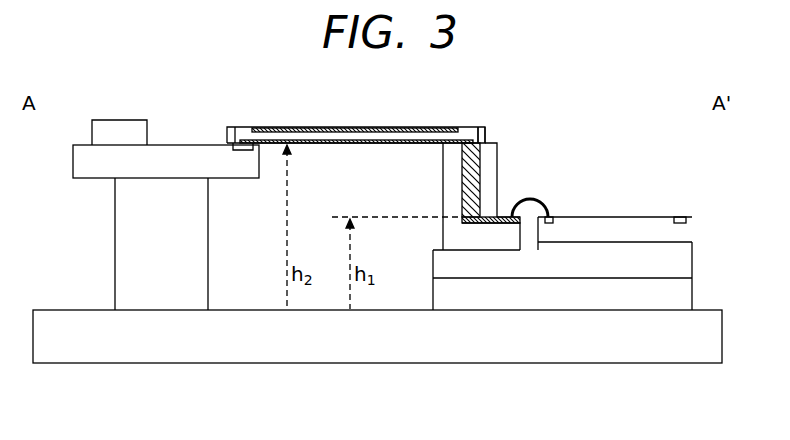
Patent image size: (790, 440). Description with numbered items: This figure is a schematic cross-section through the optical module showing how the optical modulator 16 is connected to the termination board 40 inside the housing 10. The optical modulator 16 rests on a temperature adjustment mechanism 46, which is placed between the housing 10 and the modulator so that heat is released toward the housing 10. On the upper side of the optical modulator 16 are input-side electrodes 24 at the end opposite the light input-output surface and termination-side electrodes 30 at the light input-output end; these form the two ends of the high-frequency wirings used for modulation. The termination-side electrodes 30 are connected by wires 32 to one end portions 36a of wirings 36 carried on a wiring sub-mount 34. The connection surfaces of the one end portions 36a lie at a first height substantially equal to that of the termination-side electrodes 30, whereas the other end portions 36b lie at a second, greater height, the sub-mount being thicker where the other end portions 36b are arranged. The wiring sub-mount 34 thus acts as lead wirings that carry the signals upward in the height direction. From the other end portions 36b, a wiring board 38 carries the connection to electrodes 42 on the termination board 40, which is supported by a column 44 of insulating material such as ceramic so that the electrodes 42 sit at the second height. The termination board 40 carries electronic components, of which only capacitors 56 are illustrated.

The housing 10 is at (507, 363).
The optical modulator 16 is at (620, 216).
The input-side electrodes 24 is at (680, 216).
The termination-side electrodes 30 is at (551, 218).
The wires 32 is at (534, 200).
The wiring sub-mount 34 is at (452, 188).
The wirings 36 is at (460, 162).
The one end portions of the wirings 36a is at (500, 216).
The other end portions of the wirings 36b is at (480, 127).
The wiring board 38 is at (335, 128).
The termination board 40 is at (180, 143).
The electrodes 42 is at (237, 126).
The column 44 is at (115, 242).
The temperature adjustment mechanism 46 is at (692, 288).
The capacitors 56 is at (125, 128).